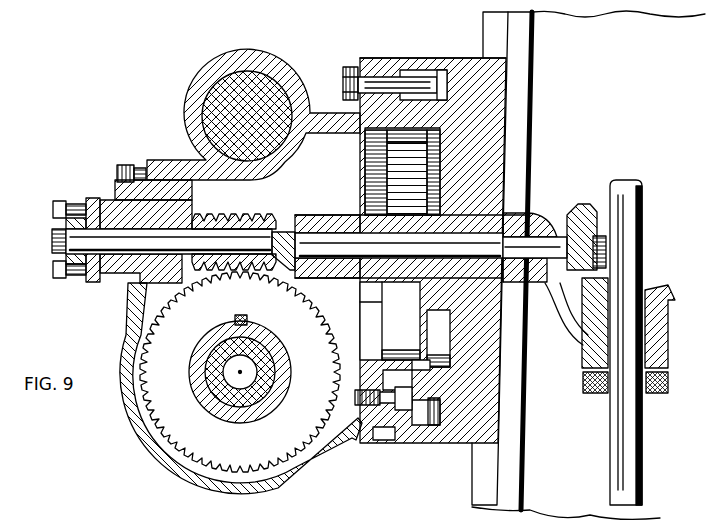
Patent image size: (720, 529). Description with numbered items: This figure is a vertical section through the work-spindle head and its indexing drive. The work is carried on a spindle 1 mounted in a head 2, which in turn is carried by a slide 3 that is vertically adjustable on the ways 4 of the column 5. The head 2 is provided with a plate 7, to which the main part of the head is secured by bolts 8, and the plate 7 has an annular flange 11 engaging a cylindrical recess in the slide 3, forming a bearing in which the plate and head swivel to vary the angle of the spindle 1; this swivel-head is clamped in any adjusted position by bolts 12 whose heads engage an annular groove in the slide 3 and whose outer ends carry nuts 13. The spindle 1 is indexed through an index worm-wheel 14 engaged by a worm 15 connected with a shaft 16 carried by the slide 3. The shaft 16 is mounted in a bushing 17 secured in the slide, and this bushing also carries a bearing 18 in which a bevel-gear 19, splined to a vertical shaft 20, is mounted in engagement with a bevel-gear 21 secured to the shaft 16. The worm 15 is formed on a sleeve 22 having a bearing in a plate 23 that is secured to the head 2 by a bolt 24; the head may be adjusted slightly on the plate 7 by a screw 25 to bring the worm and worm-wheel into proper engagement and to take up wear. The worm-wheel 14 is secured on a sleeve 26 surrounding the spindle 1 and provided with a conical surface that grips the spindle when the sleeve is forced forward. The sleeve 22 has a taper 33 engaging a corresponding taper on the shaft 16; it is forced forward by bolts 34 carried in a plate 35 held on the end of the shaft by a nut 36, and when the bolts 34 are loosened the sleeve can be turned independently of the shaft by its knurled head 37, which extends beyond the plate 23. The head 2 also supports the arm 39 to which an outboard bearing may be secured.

The spindle 1 is at (273, 377).
The head 2 is at (125, 340).
The slide 3 is at (486, 117).
The ways 4 is at (493, 31).
The column 5 is at (601, 37).
The plate 7 is at (410, 57).
The bolts 8 is at (368, 406).
The annular flange 11 is at (421, 143).
The bolts 12 is at (376, 78).
The nuts 13 is at (348, 68).
The index worm-wheel 14 is at (240, 372).
The worm 15 is at (246, 222).
The shaft 16 is at (544, 246).
The bushing 17 is at (528, 216).
The bearing 18 is at (580, 338).
The bevel-gear 19 is at (603, 395).
The vertical shaft 20 is at (612, 462).
The bevel-gear 21 is at (590, 205).
The sleeve 22 is at (182, 217).
The plate 23 is at (130, 285).
The bolt 24 is at (122, 165).
The screw 25 is at (387, 441).
The sleeve 26 is at (266, 337).
The taper 33 is at (289, 229).
The bolts 34 is at (58, 202).
The plate 35 is at (75, 280).
The nut 36 is at (52, 243).
The knurled head 37 is at (112, 192).
The arm 39 is at (252, 80).